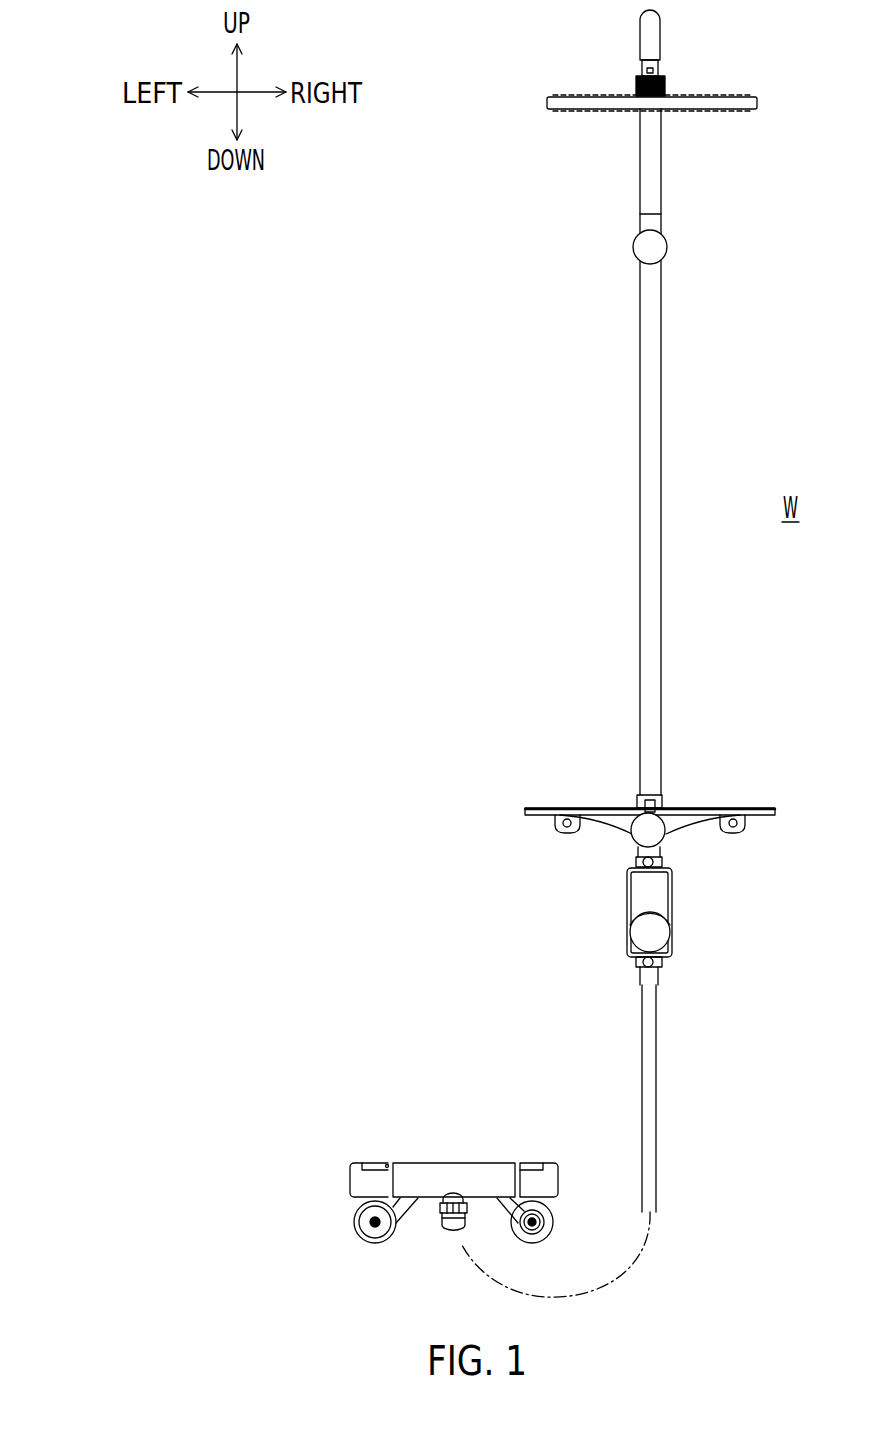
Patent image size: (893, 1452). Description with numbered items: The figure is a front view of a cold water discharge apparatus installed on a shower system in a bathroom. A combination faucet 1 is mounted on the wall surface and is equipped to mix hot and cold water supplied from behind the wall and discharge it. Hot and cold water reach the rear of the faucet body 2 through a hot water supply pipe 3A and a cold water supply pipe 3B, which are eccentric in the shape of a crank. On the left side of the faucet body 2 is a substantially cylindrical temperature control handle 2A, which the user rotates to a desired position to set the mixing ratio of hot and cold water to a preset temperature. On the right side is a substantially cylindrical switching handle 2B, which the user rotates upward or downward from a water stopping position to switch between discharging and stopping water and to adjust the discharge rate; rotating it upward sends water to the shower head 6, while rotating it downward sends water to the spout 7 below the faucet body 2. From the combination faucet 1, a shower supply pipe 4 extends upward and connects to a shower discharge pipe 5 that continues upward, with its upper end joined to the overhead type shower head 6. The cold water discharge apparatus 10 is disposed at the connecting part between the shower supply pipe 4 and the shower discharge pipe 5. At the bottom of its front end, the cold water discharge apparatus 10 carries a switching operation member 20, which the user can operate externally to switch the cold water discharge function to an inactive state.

The combination faucet 1 is at (453, 1201).
The faucet body 2 is at (487, 1178).
The temperature control handle 2A is at (360, 1181).
The switching handle 2B is at (545, 1183).
The hot water supply pipe 3A is at (398, 1205).
The cold water supply pipe 3B is at (545, 1226).
The shower supply pipe 4 is at (648, 1075).
The shower discharge pipe 5 is at (650, 461).
The shower head 6 is at (707, 99).
The spout 7 is at (453, 1223).
The cold water discharge apparatus 10 is at (648, 892).
The switching operation member 20 is at (653, 933).